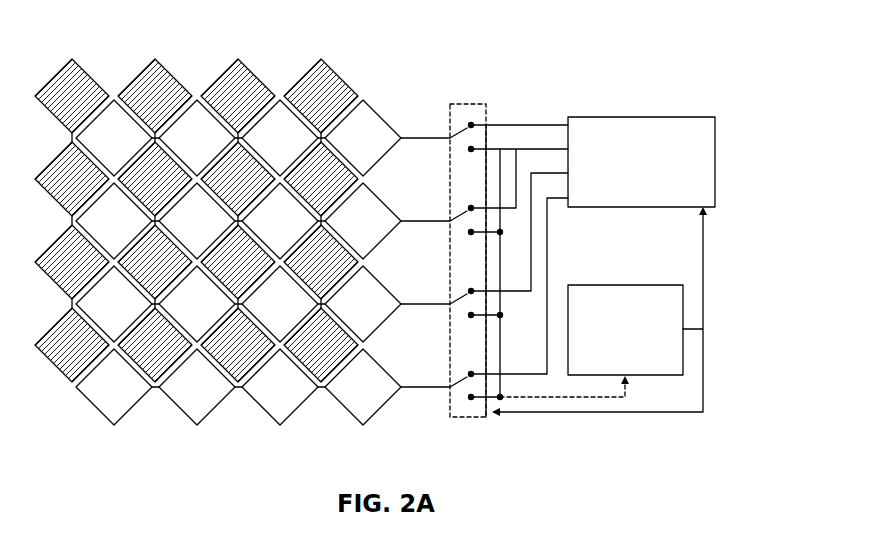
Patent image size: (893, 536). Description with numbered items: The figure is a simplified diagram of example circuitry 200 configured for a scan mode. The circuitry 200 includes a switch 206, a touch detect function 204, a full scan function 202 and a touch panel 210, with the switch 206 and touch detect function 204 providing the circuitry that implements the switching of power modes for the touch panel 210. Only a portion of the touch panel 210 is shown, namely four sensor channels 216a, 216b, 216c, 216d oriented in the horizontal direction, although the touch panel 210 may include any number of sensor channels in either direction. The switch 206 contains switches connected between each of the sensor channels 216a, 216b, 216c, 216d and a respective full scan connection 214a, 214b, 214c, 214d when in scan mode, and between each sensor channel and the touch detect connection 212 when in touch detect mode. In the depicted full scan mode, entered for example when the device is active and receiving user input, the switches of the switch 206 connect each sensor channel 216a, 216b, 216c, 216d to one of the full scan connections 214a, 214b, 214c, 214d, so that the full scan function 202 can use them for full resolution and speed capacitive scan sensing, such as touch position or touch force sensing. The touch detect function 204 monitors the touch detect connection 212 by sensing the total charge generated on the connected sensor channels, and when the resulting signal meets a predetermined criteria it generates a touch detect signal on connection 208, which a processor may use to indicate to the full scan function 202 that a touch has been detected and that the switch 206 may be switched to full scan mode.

The circuitry 200 is at (527, 47).
The full scan function 202 is at (717, 170).
The touch detect function 204 is at (686, 308).
The switch 206 is at (466, 420).
The connection 208 is at (705, 388).
The touch panel 210 is at (255, 77).
The touch detect connection 212 is at (609, 400).
The full scan connection 214a is at (508, 123).
The full scan connection 214b is at (538, 146).
The full scan connection 214c is at (552, 178).
The full scan connection 214d is at (549, 240).
The sensor channel 216a is at (408, 136).
The sensor channel 216b is at (408, 219).
The sensor channel 216c is at (408, 302).
The sensor channel 216d is at (408, 385).